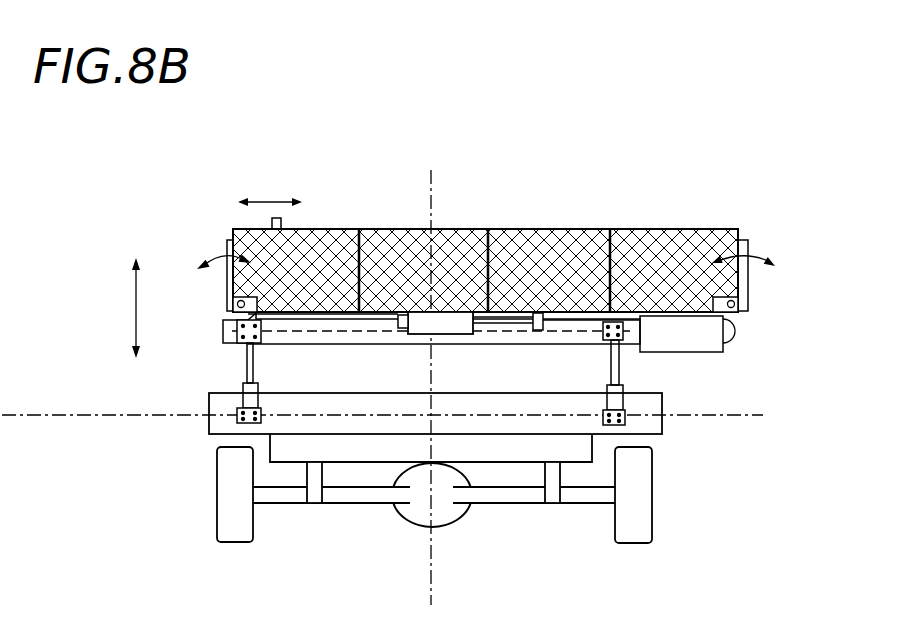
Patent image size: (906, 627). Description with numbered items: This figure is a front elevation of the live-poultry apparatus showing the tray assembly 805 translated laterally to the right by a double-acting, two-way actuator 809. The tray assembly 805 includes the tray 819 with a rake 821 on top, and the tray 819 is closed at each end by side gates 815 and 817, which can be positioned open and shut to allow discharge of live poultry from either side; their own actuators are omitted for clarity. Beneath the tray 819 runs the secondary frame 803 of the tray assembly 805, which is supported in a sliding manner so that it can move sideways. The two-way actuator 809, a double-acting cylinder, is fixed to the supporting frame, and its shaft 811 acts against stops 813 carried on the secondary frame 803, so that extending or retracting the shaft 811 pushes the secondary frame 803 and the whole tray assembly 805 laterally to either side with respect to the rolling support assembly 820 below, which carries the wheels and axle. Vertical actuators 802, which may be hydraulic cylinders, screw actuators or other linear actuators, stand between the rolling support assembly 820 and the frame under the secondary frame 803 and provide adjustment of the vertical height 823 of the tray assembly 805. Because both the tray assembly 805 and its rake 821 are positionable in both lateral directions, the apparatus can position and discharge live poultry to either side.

The vertical actuators 802 is at (243, 372).
The secondary frame 803 is at (725, 350).
The tray assembly 805 is at (670, 181).
The two-way actuator 809 is at (420, 335).
The shaft 811 is at (507, 324).
The stops 813 is at (400, 328).
The side gate 815 is at (227, 242).
The side gate 817 is at (748, 275).
The tray 819 is at (327, 229).
The rolling support assembly 820 is at (702, 525).
The rake 821 is at (270, 219).
The vertical height 823 is at (136, 305).